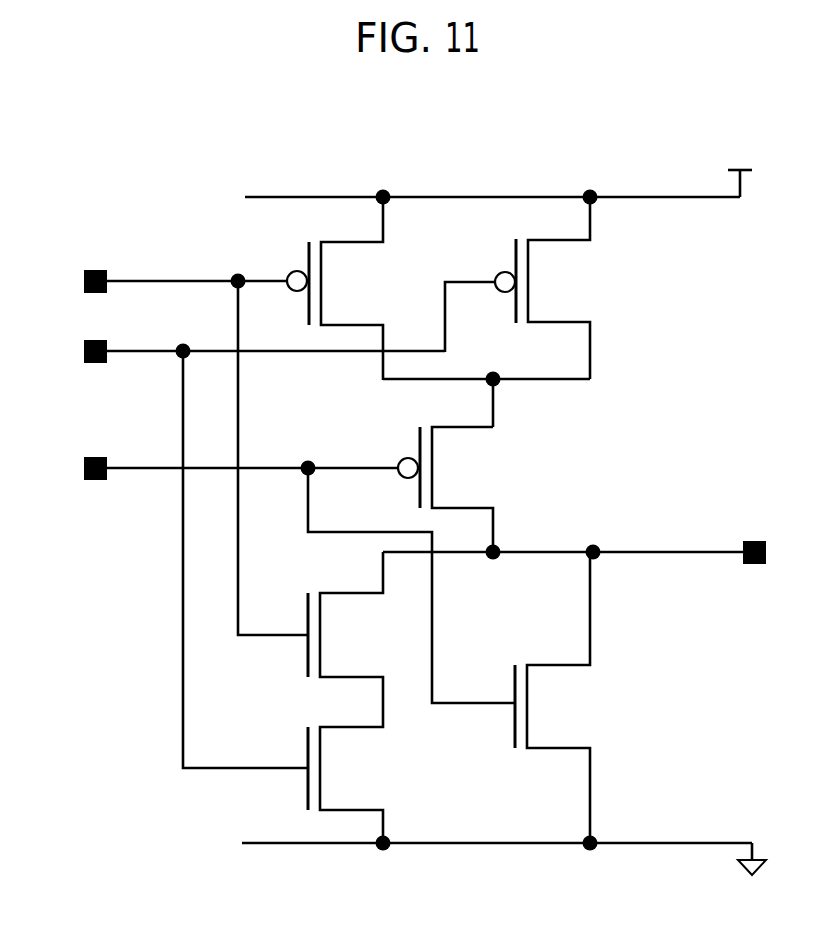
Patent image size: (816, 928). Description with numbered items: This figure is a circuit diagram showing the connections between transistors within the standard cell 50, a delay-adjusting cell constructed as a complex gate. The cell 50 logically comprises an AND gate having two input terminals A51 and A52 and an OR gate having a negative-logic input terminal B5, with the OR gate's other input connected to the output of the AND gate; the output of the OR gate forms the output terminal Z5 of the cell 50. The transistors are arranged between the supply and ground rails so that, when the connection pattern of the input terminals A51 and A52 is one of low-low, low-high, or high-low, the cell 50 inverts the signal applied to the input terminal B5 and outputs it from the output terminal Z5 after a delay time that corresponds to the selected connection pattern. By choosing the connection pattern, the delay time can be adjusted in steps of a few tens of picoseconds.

The standard cell 50 is at (583, 152).
The input terminal A51 is at (168, 452).
The input terminal A52 is at (236, 554).
The negative-logic input terminal B5 is at (220, 470).
The output terminal Z5 is at (596, 554).